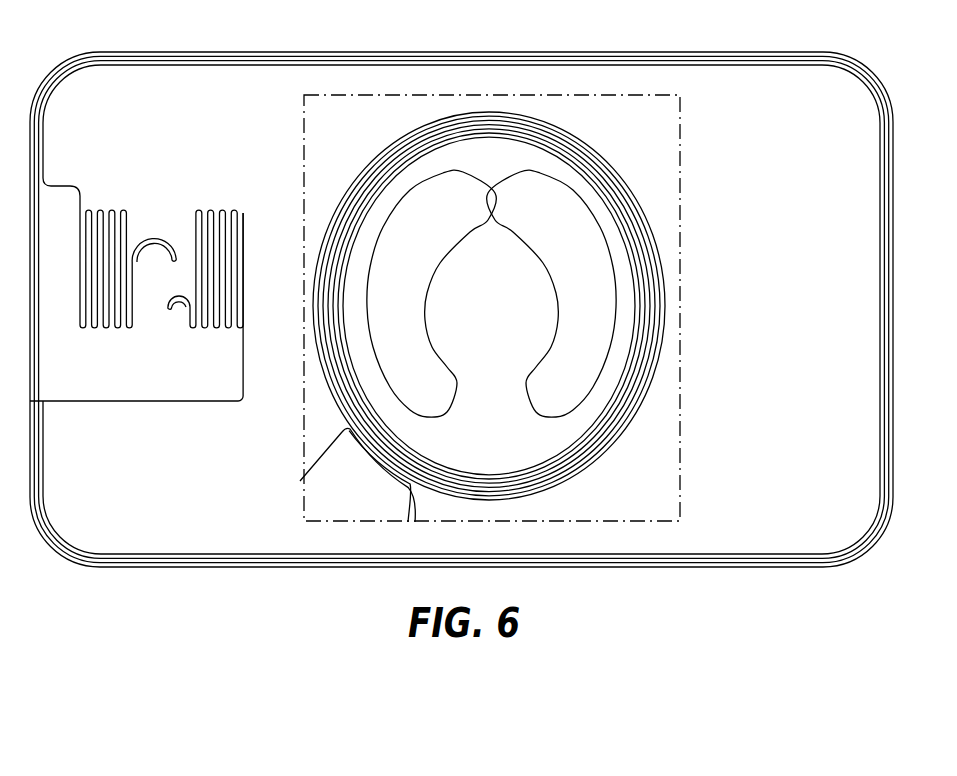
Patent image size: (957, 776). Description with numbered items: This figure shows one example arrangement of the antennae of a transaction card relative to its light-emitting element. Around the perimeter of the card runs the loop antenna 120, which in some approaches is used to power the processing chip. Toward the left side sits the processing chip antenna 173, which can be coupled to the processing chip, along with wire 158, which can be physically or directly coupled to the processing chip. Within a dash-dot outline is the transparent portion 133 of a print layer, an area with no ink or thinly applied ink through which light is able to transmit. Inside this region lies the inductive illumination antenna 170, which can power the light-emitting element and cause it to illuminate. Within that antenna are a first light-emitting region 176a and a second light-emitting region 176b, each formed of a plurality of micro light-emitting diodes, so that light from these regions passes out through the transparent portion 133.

The loop antenna 120 is at (300, 52).
The wire 158 is at (152, 306).
The processing chip antenna 173 is at (150, 402).
The transparent portion 133 is at (683, 228).
The inductive illumination antenna 170 is at (593, 460).
The first light-emitting region 176a is at (440, 263).
The second light-emitting region 176b is at (557, 326).